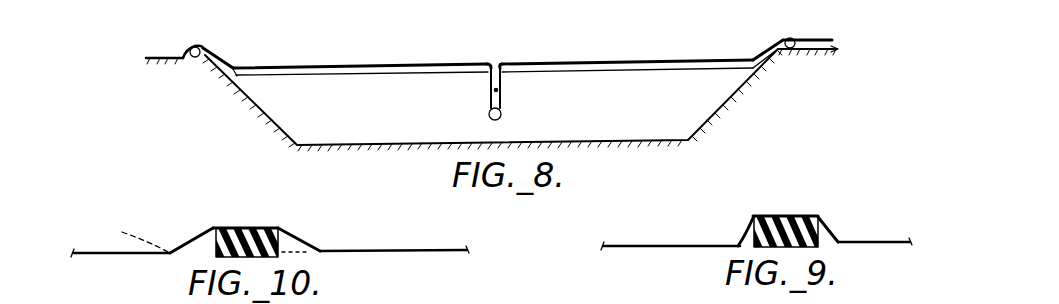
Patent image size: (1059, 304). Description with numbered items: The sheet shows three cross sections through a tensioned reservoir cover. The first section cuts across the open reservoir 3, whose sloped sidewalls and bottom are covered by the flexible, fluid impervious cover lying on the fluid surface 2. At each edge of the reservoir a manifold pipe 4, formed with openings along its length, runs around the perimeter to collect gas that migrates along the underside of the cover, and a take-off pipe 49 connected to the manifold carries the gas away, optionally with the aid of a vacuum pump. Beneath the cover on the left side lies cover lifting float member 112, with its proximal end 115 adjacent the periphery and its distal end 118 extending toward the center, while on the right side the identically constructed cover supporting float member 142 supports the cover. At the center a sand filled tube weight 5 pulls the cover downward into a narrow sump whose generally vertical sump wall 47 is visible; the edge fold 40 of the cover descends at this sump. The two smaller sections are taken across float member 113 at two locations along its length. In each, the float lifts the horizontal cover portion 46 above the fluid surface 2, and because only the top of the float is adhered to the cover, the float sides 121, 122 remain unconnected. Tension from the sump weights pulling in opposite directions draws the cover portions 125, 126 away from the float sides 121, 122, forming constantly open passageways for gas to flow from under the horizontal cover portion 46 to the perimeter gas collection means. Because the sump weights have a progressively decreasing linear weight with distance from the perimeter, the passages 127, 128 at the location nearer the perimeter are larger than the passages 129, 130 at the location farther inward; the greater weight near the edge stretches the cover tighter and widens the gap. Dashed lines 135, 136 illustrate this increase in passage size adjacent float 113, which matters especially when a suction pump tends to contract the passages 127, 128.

In FIG. 8, the fluid surface 2 is at (548, 70).
In FIG. 10, the fluid surface 2 is at (190, 249).
In FIG. 9, the fluid surface 2 is at (746, 243).
In FIG. 8, the open reservoir 3 is at (289, 118).
In FIG. 8, the manifold pipe 4 is at (191, 46).
In FIG. 8, the sand filled tube weight 5 is at (503, 115).
In FIG. 8, the liner edge fold 40 is at (490, 100).
In FIG. 10, the horizontal cover portion 46 is at (415, 250).
In FIG. 9, the horizontal cover portion 46 is at (662, 245).
In FIG. 8, the sump wall 47 is at (502, 90).
In FIG. 8, the take-off pipe 49 is at (821, 40).
In FIG. 8, the cover lifting float member 112 is at (322, 68).
In FIG. 10, the cover lifting float member 113 is at (257, 220).
In FIG. 9, the cover lifting float member 113 is at (774, 214).
In FIG. 8, the proximal end of float 115 is at (233, 66).
In FIG. 8, the distal end of float 118 is at (489, 62).
In FIG. 10, the float side 121 is at (210, 233).
In FIG. 9, the float side 121 is at (750, 230).
In FIG. 10, the float side 122 is at (285, 226).
In FIG. 9, the float side 122 is at (823, 218).
In FIG. 10, the cover portion 125 is at (204, 235).
In FIG. 9, the cover portion 125 is at (747, 232).
In FIG. 10, the cover portion 126 is at (304, 234).
In FIG. 9, the cover portion 126 is at (828, 228).
In FIG. 10, the passage 127 is at (197, 236).
In FIG. 10, the passage 128 is at (308, 238).
In FIG. 9, the passage 129 is at (740, 228).
In FIG. 9, the passage 130 is at (834, 223).
In FIG. 10, the dashed line 135 is at (127, 236).
In FIG. 9, the dashed line 135 is at (740, 240).
In FIG. 10, the dashed line 136 is at (336, 243).
In FIG. 9, the dashed line 136 is at (840, 237).
In FIG. 8, the cover supporting float member 142 is at (623, 66).